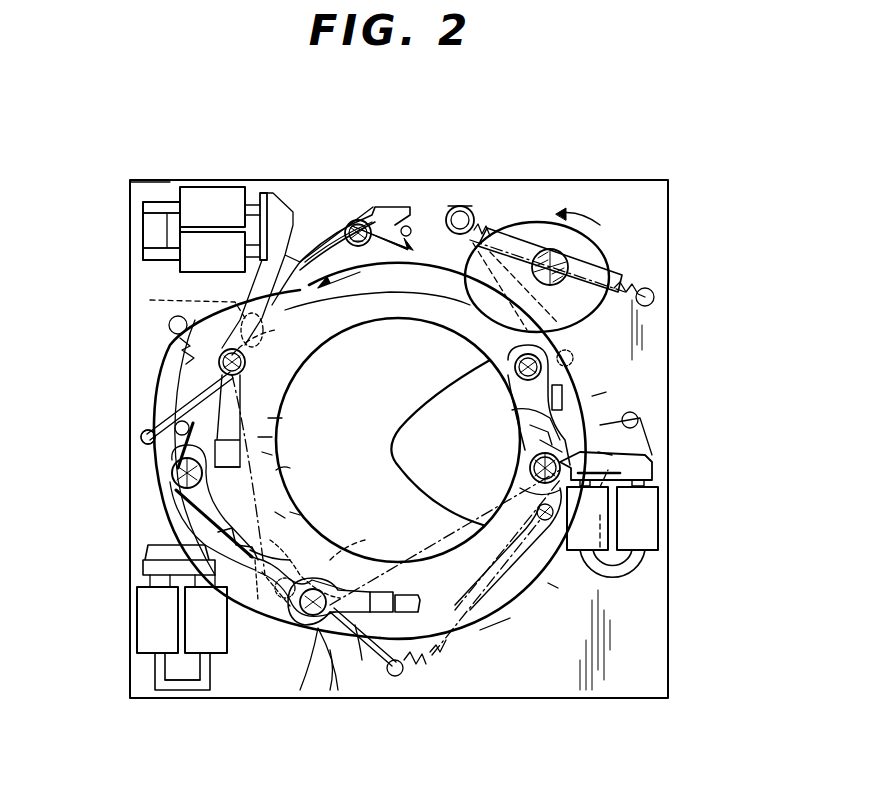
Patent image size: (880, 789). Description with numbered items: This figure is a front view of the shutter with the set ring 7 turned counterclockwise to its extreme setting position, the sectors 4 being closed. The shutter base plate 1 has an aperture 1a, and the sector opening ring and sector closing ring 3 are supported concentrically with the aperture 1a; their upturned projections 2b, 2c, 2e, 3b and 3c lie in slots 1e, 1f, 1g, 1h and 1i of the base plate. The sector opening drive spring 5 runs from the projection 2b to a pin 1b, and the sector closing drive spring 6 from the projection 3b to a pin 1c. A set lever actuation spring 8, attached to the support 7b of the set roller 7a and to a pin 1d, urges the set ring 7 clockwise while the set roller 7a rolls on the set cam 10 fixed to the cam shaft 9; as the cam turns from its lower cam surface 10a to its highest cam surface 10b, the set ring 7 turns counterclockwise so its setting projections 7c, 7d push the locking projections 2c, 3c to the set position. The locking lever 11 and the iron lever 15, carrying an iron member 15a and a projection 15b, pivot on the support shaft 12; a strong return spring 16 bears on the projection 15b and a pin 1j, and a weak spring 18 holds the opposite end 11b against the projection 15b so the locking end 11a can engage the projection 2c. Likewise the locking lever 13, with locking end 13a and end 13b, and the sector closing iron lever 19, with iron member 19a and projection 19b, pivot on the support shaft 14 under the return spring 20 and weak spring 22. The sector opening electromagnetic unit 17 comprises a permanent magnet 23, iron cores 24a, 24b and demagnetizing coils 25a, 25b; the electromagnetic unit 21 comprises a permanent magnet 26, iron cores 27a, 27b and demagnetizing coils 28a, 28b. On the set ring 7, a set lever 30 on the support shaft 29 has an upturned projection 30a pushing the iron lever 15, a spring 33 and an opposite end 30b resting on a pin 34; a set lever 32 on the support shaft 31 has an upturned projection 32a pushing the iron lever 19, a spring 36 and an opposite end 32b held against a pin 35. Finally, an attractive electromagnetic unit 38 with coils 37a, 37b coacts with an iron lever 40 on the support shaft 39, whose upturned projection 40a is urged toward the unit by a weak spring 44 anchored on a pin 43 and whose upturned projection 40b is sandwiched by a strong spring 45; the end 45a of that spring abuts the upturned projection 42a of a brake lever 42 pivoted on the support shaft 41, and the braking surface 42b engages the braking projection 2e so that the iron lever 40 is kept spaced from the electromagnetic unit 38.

The shutter base plate 1 is at (612, 698).
The aperture 1a is at (282, 468).
The pin 1b is at (169, 325).
The pin 1c is at (396, 676).
The pin 1d is at (654, 297).
The slot 1e is at (268, 418).
The slot 1f is at (278, 518).
The slot 1g is at (600, 455).
The slot 1h is at (552, 588).
The slot 1i is at (408, 595).
The pin 1j is at (142, 430).
The upturned projection 2b is at (296, 512).
The upturned locking projection 2c is at (262, 452).
The upturned braking projection 2e is at (598, 397).
The sector closing ring 3 is at (445, 562).
The upturned projection 3b is at (545, 540).
The upturned locking projection 3c is at (440, 640).
The sector 4 is at (398, 432).
The sector opening drive spring 5 is at (182, 352).
The sector closing drive spring 6 is at (418, 668).
The set ring 7 is at (498, 628).
The set roller 7a is at (464, 206).
The support 7b is at (474, 216).
The setting projection 7c is at (262, 437).
The setting projection 7d is at (388, 592).
The set lever actuation spring 8 is at (622, 284).
The cam shaft 9 is at (550, 249).
The set cam 10 is at (592, 250).
The lower cam surface 10a is at (515, 243).
The highest cam surface 10b is at (476, 232).
The locking lever 11 is at (250, 400).
The locking end 11a is at (215, 458).
The opposite end 11b is at (264, 330).
The support shaft 12 is at (218, 363).
The locking lever 13 is at (352, 600).
The locking end 13a is at (362, 660).
The end 13b is at (345, 548).
The support shaft 14 is at (330, 634).
The iron lever 15 is at (235, 310).
The iron member 15a is at (264, 198).
The projection 15b is at (150, 300).
The return spring 16 is at (192, 405).
The sector opening electromagnetic unit 17 is at (172, 178).
The weak spring 18 is at (285, 362).
The sector closing iron lever 19 is at (256, 605).
The iron member 19a is at (150, 558).
The projection 19b is at (282, 604).
The return spring 20 is at (330, 690).
The electromagnetic unit 21 is at (148, 675).
The weak spring 22 is at (345, 650).
The permanent magnet 23 is at (143, 231).
The iron core 24a is at (143, 205).
The iron core 24b is at (143, 257).
The demagnetizing coil 25a is at (212, 200).
The demagnetizing coil 25b is at (222, 240).
The permanent magnet 26 is at (183, 692).
The iron core 27a is at (160, 690).
The iron core 27b is at (205, 690).
The demagnetizing coil 28a is at (158, 610).
The demagnetizing coil 28b is at (205, 625).
The support shaft 29 is at (364, 222).
The set lever 30 is at (312, 232).
The upturned projection 30a is at (330, 303).
The opposite end 30b is at (400, 226).
The support shaft 31 is at (170, 478).
The set lever 32 is at (178, 502).
The upturned projection 32a is at (290, 548).
The opposite end 32b is at (175, 429).
The spring 33 is at (336, 243).
The pin 34 is at (420, 246).
The pin 35 is at (141, 437).
The spring 36 is at (215, 535).
The coil 37a is at (610, 560).
The coil 37b is at (656, 528).
The attractive electromagnetic unit 38 is at (668, 588).
The support shaft 39 is at (530, 485).
The iron lever 40 is at (652, 476).
The upturned projection 40a is at (656, 495).
The upturned projection 40b is at (645, 418).
The support shaft 41 is at (570, 350).
The brake lever 42 is at (548, 375).
The upturned projection 42a is at (515, 410).
The braking surface 42b is at (575, 418).
The pin 43 is at (639, 422).
The weak spring 44 is at (652, 472).
The strong spring 45 is at (530, 466).
The end 45a is at (530, 430).